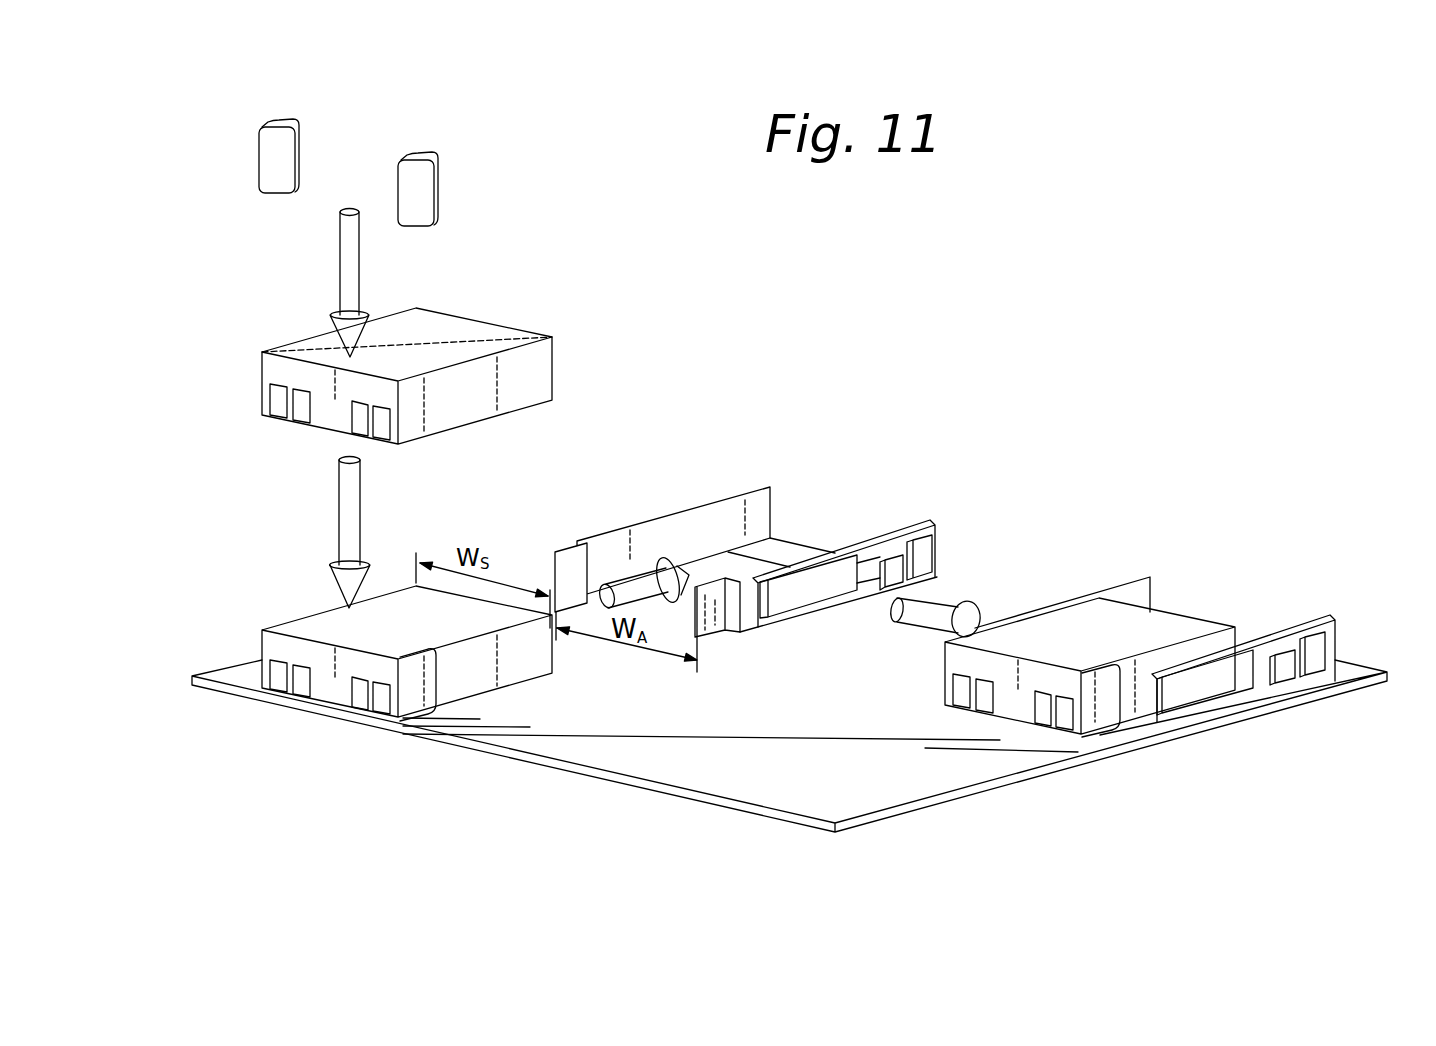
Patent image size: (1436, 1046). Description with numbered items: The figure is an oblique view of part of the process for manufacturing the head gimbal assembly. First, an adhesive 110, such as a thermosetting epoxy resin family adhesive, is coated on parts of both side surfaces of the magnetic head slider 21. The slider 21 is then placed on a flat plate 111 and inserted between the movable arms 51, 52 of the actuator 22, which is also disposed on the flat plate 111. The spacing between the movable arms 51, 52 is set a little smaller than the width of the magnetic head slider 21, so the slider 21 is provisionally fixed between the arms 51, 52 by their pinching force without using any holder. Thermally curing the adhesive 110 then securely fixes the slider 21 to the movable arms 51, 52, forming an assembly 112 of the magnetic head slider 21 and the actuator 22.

The magnetic head slider 21 is at (482, 333).
The actuator 22 is at (857, 550).
The movable arm 51 is at (647, 520).
The movable arm 52 is at (785, 603).
The adhesive 110 is at (415, 175).
The flat plate 111 is at (605, 757).
The assembly 112 is at (1215, 517).